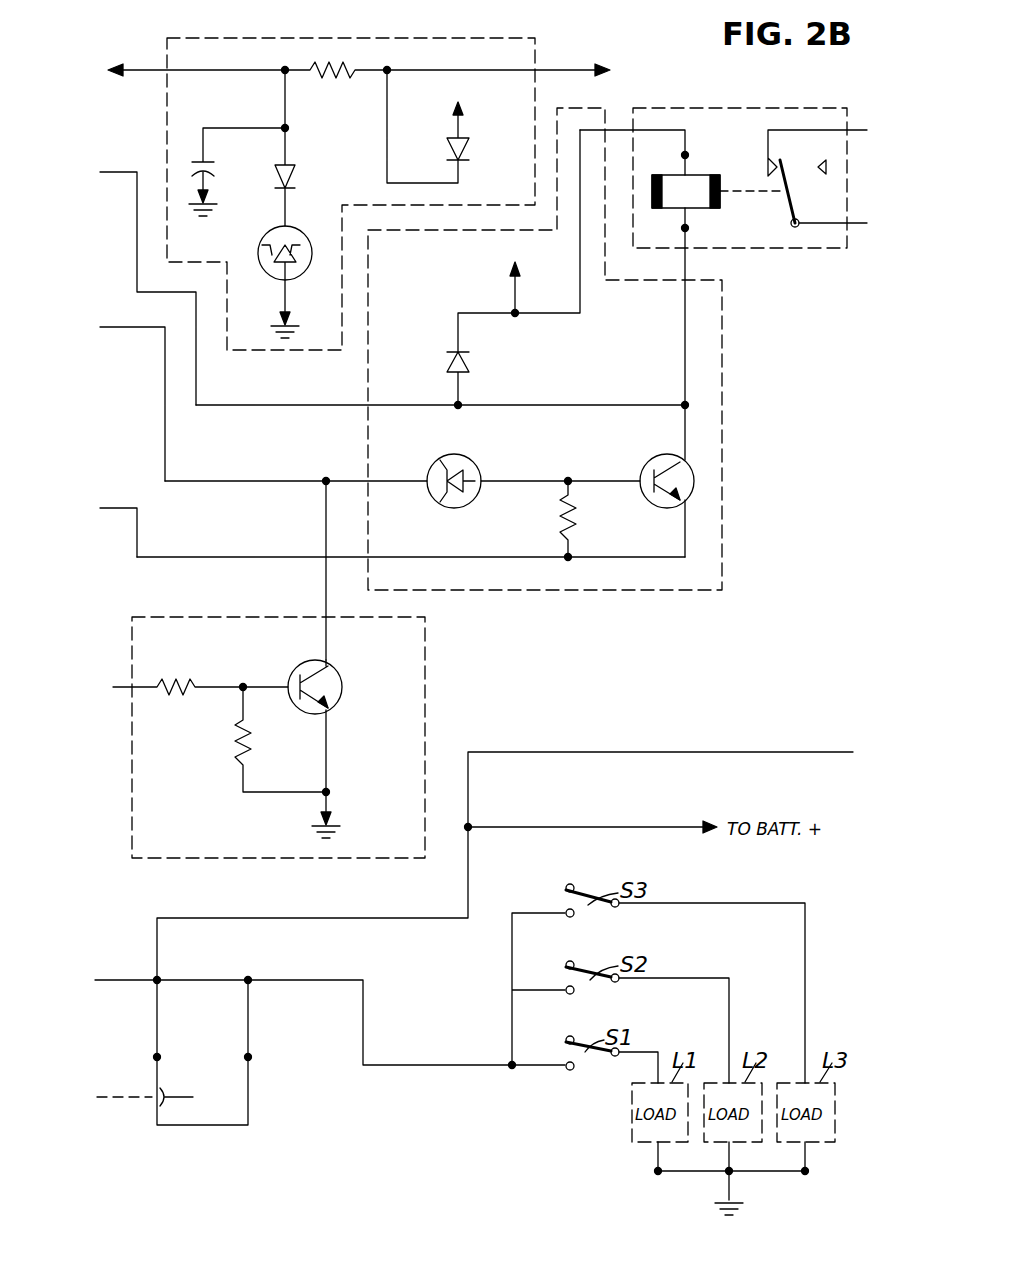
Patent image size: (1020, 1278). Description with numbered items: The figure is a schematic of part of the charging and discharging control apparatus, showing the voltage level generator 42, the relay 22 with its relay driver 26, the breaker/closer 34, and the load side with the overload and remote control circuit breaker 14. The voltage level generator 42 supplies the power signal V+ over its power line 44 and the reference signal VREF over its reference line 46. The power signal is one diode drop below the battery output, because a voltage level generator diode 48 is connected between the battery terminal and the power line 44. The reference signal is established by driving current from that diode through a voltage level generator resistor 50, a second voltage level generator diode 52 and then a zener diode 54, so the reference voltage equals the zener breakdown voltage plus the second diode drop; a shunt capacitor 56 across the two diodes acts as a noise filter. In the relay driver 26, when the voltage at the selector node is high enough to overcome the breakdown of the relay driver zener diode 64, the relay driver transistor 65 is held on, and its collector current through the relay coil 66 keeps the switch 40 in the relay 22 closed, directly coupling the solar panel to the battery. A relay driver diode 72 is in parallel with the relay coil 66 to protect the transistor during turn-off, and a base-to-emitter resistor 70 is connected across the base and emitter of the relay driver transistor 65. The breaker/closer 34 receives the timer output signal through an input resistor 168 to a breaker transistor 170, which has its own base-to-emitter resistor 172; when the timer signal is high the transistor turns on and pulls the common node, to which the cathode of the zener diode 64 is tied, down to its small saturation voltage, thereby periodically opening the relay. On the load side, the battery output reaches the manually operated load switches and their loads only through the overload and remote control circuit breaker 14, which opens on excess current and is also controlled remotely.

The overload and remote control circuit breaker 14 is at (178, 1108).
The relay 22 is at (733, 108).
The relay driver 26 is at (722, 336).
The breaker/closer 34 is at (425, 694).
The switch 40 is at (790, 200).
The voltage level generator 42 is at (166, 116).
The power line 44 is at (548, 72).
The reference line 46 is at (128, 68).
The voltage level generator diode 48 is at (470, 152).
The voltage level generator resistor 50 is at (336, 86).
The second voltage level generator diode 52 is at (290, 170).
The zener diode 54 is at (272, 233).
The shunt capacitor 56 is at (205, 160).
The relay driver zener diode 64 is at (476, 468).
The relay driver transistor 65 is at (668, 455).
The relay coil 66 is at (708, 175).
The base-to-emitter resistor 70 is at (576, 522).
The relay driver diode 72 is at (466, 359).
The input resistor 168 is at (176, 684).
The breaker transistor 170 is at (338, 674).
The base-to-emitter resistor 172 is at (236, 742).